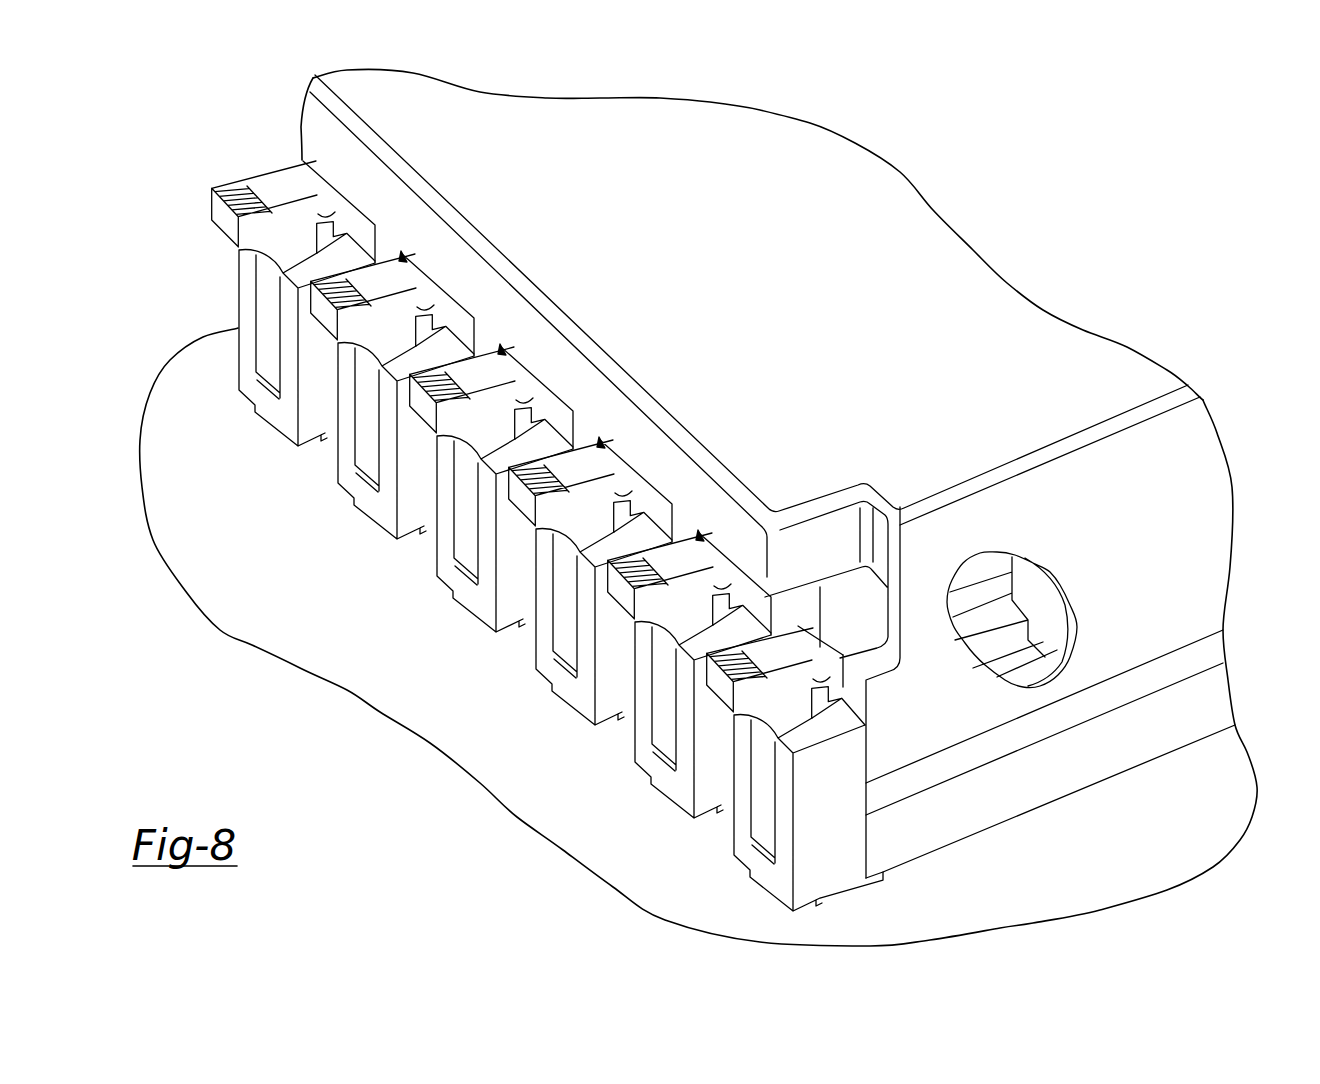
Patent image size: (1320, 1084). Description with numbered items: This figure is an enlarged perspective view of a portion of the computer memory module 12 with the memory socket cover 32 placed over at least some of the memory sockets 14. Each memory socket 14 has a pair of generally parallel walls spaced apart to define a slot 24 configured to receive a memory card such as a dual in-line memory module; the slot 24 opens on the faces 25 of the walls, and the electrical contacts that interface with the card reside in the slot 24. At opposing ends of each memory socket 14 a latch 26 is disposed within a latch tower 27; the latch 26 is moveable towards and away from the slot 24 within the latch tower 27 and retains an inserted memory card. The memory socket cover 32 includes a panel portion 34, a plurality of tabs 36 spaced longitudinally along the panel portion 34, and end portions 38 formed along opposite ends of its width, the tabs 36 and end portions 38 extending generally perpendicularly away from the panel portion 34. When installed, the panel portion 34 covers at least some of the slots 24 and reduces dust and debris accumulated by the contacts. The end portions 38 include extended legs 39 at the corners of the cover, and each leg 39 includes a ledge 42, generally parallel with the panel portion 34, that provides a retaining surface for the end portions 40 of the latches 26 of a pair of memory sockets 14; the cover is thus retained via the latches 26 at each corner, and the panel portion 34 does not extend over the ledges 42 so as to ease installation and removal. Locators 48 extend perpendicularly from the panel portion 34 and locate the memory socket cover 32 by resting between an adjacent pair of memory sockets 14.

The housing 12 is at (540, 822).
The memory socket 14 is at (531, 546).
The slot 24 is at (963, 603).
The faces 25 is at (972, 565).
The latch 26 is at (296, 189).
The latch tower 27 is at (241, 299).
The memory socket cover 32 is at (900, 172).
The panel portion 34 is at (970, 273).
The tabs 36 is at (381, 257).
The end portions 38 is at (1210, 577).
The extended legs 39 is at (878, 749).
The end portions of the latches 40 is at (345, 202).
The ledge 42 is at (887, 677).
The locators 48 is at (980, 665).